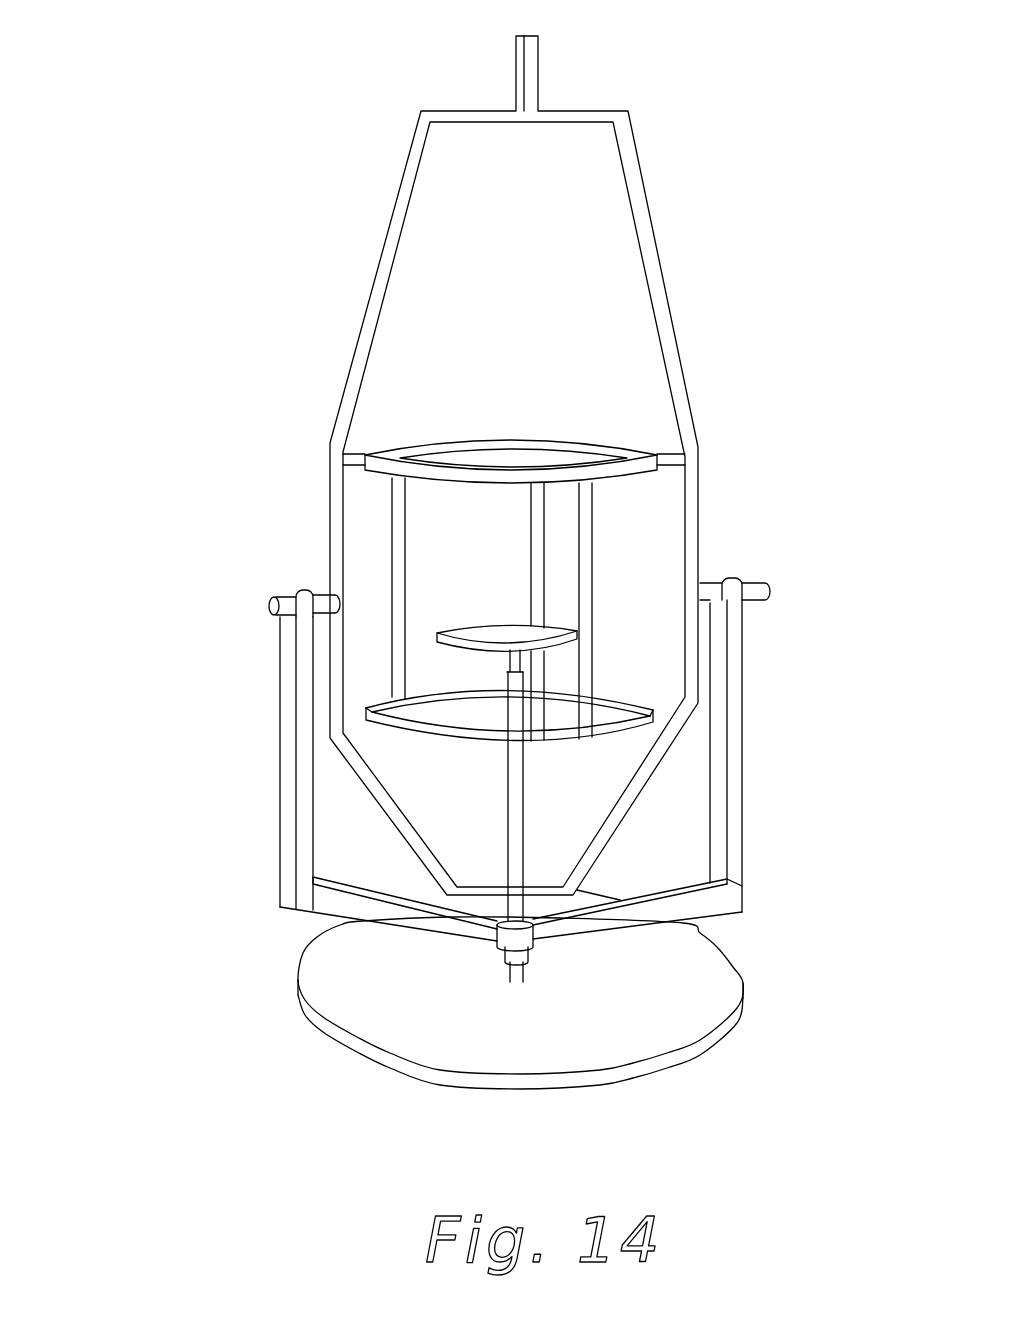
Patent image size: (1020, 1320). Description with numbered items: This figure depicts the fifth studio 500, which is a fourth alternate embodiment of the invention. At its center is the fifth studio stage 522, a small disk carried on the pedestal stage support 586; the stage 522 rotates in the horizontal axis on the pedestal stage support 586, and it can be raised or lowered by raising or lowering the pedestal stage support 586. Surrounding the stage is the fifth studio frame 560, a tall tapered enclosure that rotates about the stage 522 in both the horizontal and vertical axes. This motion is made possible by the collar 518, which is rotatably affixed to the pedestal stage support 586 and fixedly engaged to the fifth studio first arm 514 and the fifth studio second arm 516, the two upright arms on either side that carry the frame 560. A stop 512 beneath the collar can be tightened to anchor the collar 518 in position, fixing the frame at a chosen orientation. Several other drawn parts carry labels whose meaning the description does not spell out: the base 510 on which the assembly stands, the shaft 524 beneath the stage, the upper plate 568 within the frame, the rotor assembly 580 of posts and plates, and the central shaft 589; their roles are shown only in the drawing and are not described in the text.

The fifth studio 500 is at (270, 238).
The base 510 is at (507, 973).
The stop 512 is at (506, 957).
The fifth studio first arm 514 is at (738, 788).
The fifth studio second arm 516 is at (288, 703).
The collar 518 is at (527, 935).
The fifth studio stage 522 is at (513, 635).
The disk shaft 524 is at (517, 660).
The fifth studio frame 560 is at (657, 313).
The upper plate 568 is at (528, 440).
The rotor assembly 580 is at (478, 592).
The pedestal stage support 586 is at (455, 738).
The central shaft 589 is at (510, 767).